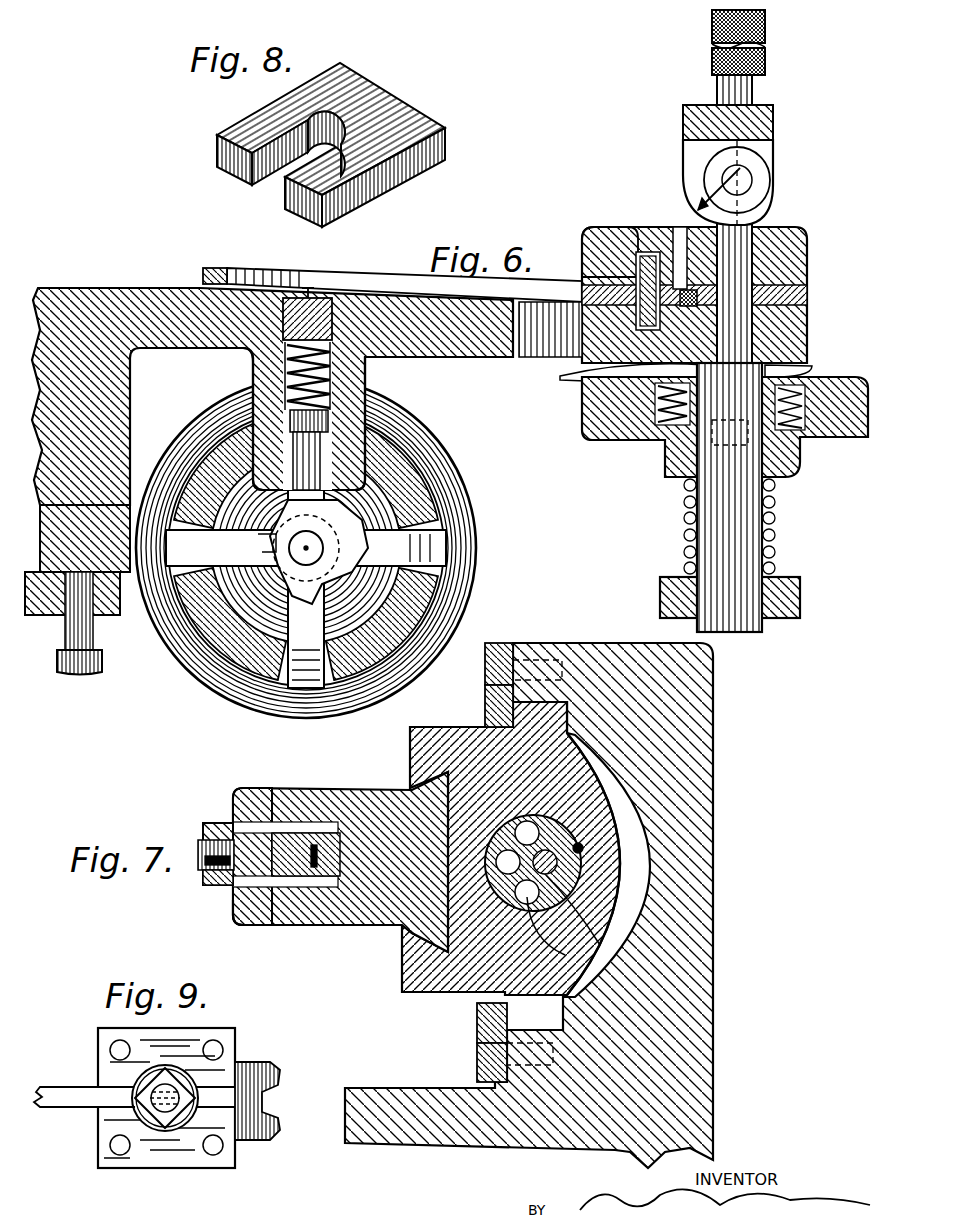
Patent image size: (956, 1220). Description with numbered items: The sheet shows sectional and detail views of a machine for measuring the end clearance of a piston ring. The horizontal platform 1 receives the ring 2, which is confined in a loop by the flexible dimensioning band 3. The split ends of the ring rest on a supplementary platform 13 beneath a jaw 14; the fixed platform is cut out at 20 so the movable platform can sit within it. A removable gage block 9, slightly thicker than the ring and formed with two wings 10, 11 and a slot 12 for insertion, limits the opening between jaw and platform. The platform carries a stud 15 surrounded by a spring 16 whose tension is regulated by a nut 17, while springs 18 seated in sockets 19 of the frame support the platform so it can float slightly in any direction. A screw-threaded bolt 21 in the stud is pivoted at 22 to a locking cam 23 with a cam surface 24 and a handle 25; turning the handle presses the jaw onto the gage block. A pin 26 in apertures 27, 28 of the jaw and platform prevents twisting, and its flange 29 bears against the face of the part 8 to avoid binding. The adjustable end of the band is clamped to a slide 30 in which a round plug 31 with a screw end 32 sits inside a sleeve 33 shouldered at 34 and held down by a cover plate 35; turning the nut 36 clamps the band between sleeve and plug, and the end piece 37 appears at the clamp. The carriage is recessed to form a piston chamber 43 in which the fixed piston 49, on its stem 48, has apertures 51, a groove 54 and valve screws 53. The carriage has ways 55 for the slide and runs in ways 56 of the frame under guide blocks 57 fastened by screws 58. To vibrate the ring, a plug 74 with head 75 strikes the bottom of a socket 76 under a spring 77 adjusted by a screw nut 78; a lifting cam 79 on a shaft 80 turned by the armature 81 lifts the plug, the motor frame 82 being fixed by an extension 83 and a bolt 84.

In FIG. 6, the horizontal platform 1 is at (172, 300).
In FIG. 6, the ring 2 is at (352, 275).
In FIG. 6, the flexible dimensioning band 3 is at (202, 275).
In FIG. 7, the flexible dimensioning band 3 is at (338, 835).
In FIG. 9, the flexible dimensioning band 3 is at (58, 1095).
In FIG. 6, the part (guide) 8 is at (645, 258).
In FIG. 8, the gage block 9 is at (398, 118).
In FIG. 6, the gage block 9 is at (800, 300).
In FIG. 8, the wing 10 is at (350, 170).
In FIG. 8, the wing 11 is at (255, 125).
In FIG. 8, the slot 12 is at (290, 165).
In FIG. 6, the supplementary platform 13 is at (620, 315).
In FIG. 6, the jaw 14 is at (590, 260).
In FIG. 6, the stud 15 is at (735, 527).
In FIG. 6, the spring 16 is at (776, 516).
In FIG. 6, the nut 17 is at (665, 450).
In FIG. 6, the springs 18 is at (660, 420).
In FIG. 6, the sockets 19 is at (822, 400).
In FIG. 6, the cut-out portion 20 is at (630, 392).
In FIG. 6, the screw-threaded bolt 21 is at (775, 258).
In FIG. 6, the pivot 22 is at (748, 172).
In FIG. 6, the locking cam 23 is at (695, 162).
In FIG. 6, the cam surface 24 is at (700, 225).
In FIG. 6, the handle 25 is at (712, 58).
In FIG. 6, the pin 26 is at (675, 255).
In FIG. 6, the aperture 27 is at (755, 240).
In FIG. 6, the aperture 28 is at (600, 378).
In FIG. 6, the flange 29 is at (585, 318).
In FIG. 7, the slide (clamp) 30 is at (380, 925).
In FIG. 9, the slide (clamp) 30 is at (232, 1035).
In FIG. 7, the round plug 31 is at (300, 840).
In FIG. 9, the round plug 31 is at (98, 1108).
In FIG. 7, the screw end 32 is at (198, 852).
In FIG. 7, the sleeve 33 is at (222, 823).
In FIG. 9, the sleeve 33 is at (135, 1080).
In FIG. 7, the shoulder 34 is at (236, 920).
In FIG. 7, the cover plate 35 is at (258, 795).
In FIG. 7, the nut 36 is at (212, 882).
In FIG. 9, the nut 36 is at (168, 1120).
In FIG. 9, the end piece 37 is at (262, 1145).
In FIG. 7, the piston chamber 43 is at (572, 835).
In FIG. 7, the piston stem 48 is at (565, 905).
In FIG. 7, the piston 49 is at (600, 905).
In FIG. 7, the apertures 51 is at (530, 945).
In FIG. 7, the screws 53 is at (585, 848).
In FIG. 7, the groove 54 is at (560, 862).
In FIG. 7, the ways 55 is at (405, 985).
In FIG. 7, the ways 56 is at (540, 690).
In FIG. 7, the guide blocks 57 is at (490, 712).
In FIG. 7, the screws 58 is at (540, 662).
In FIG. 6, the plug 74 is at (300, 458).
In FIG. 6, the head 75 is at (285, 405).
In FIG. 6, the socket 76 is at (272, 378).
In FIG. 6, the spring 77 is at (338, 385).
In FIG. 6, the screw nut 78 is at (310, 288).
In FIG. 6, the lifting cam 79 is at (266, 542).
In FIG. 6, the shaft 80 is at (325, 546).
In FIG. 6, the armature 81 is at (355, 610).
In FIG. 6, the motor frame 82 is at (192, 458).
In FIG. 6, the extension 83 is at (58, 538).
In FIG. 6, the bolt 84 is at (62, 653).